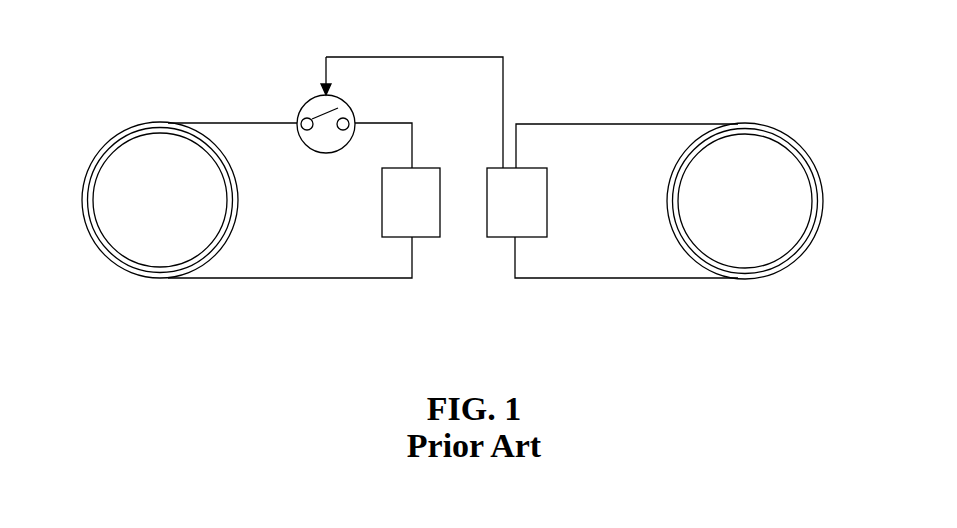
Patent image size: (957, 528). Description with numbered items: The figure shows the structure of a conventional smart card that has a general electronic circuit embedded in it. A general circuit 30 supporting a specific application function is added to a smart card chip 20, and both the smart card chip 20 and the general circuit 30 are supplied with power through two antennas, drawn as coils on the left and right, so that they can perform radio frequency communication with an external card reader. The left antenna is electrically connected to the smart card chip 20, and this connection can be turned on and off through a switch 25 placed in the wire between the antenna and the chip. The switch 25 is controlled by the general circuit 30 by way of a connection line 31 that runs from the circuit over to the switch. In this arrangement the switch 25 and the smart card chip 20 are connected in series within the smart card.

The smart card chip 20 is at (382, 212).
The switch 25 is at (300, 107).
The general circuit 30 is at (547, 196).
The connection line 31 is at (414, 57).